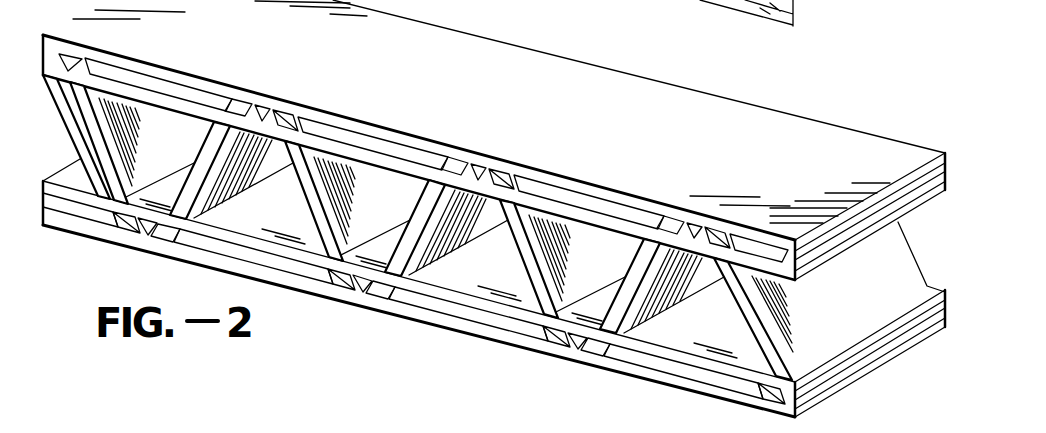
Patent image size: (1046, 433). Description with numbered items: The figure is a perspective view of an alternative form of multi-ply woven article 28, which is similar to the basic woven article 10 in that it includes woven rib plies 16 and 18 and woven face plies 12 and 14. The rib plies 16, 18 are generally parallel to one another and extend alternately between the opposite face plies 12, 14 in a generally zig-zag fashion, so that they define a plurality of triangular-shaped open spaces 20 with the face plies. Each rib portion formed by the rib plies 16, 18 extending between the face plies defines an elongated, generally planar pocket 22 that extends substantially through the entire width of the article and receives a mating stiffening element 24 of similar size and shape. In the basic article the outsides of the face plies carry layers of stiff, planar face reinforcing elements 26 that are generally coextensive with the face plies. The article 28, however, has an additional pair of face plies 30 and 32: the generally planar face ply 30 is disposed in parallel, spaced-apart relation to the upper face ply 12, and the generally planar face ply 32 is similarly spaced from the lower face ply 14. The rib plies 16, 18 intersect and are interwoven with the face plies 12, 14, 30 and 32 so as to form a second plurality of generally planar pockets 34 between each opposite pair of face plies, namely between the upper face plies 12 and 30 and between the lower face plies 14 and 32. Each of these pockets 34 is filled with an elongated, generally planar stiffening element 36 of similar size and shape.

The multi-ply woven article 10 is at (645, 3).
The face ply 12 is at (640, 220).
The face ply 14 is at (692, 357).
The rib ply 16 is at (575, 327).
The rib ply 18 is at (617, 372).
The triangular-shaped open spaces 20 is at (477, 282).
The pocket 22 is at (513, 296).
The stiffening element 24 is at (548, 303).
The face reinforcing elements 26 is at (815, 8).
The article 28 is at (610, 383).
The face ply 30 is at (617, 192).
The face ply 32 is at (725, 390).
The pockets 34 is at (593, 197).
The stiffening element 36 is at (193, 94).